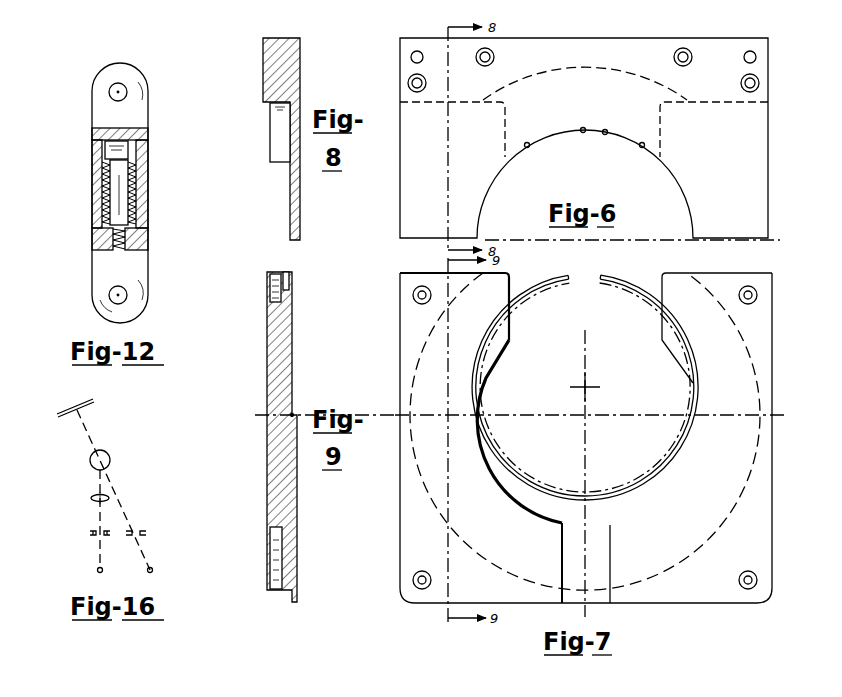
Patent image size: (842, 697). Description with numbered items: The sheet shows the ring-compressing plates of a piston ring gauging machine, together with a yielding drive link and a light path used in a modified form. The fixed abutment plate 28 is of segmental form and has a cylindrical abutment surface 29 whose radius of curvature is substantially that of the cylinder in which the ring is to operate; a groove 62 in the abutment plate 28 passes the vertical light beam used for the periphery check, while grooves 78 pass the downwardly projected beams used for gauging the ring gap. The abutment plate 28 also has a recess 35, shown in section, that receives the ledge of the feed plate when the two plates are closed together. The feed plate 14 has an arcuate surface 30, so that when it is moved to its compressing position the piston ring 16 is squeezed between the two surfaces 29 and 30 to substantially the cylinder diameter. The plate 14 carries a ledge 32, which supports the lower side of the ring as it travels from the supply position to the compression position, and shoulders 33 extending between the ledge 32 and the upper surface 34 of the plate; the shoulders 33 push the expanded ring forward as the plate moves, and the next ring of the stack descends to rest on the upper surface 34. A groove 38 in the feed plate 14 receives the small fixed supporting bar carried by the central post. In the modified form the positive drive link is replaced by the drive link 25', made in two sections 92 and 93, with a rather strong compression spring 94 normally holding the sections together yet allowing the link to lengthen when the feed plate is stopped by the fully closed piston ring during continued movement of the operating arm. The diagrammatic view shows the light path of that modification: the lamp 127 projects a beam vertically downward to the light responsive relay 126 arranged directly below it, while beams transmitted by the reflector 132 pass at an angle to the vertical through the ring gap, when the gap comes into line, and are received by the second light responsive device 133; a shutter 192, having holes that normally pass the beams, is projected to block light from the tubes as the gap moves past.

In FIG. 12, the drive link 25' is at (97, 193).
In FIG. 12, the link section 92 is at (92, 192).
In FIG. 12, the link section 93 is at (92, 236).
In FIG. 12, the compression spring 94 is at (148, 192).
In FIG. 16, the reflector 132 is at (62, 409).
In FIG. 16, the lamp 127 is at (90, 460).
In FIG. 16, the shutter 192 is at (86, 535).
In FIG. 16, the light responsive relay 126 is at (96, 570).
In FIG. 16, the second light responsive device 133 is at (154, 569).
In FIG. 8, the abutment plate 28 is at (300, 64).
In FIG. 6, the abutment plate 28 is at (400, 208).
In FIG. 8, the recess 35 is at (290, 208).
In FIG. 6, the cylindrical abutment surface 29 is at (683, 208).
In FIG. 6, the grooves 78 is at (527, 148).
In FIG. 6, the groove 62 is at (583, 133).
In FIG. 9, the feed plate 14 is at (267, 470).
In FIG. 7, the feed plate 14 is at (400, 554).
In FIG. 9, the ledge 32 is at (292, 336).
In FIG. 7, the ledge 32 is at (400, 336).
In FIG. 9, the shoulders 33 is at (292, 414).
In FIG. 7, the shoulders 33 is at (432, 415).
In FIG. 9, the upper surface 34 is at (297, 540).
In FIG. 7, the upper surface 34 is at (493, 550).
In FIG. 7, the ring 16 is at (552, 283).
In FIG. 7, the arcuate surface 30 is at (492, 382).
In FIG. 7, the groove 38 is at (602, 568).